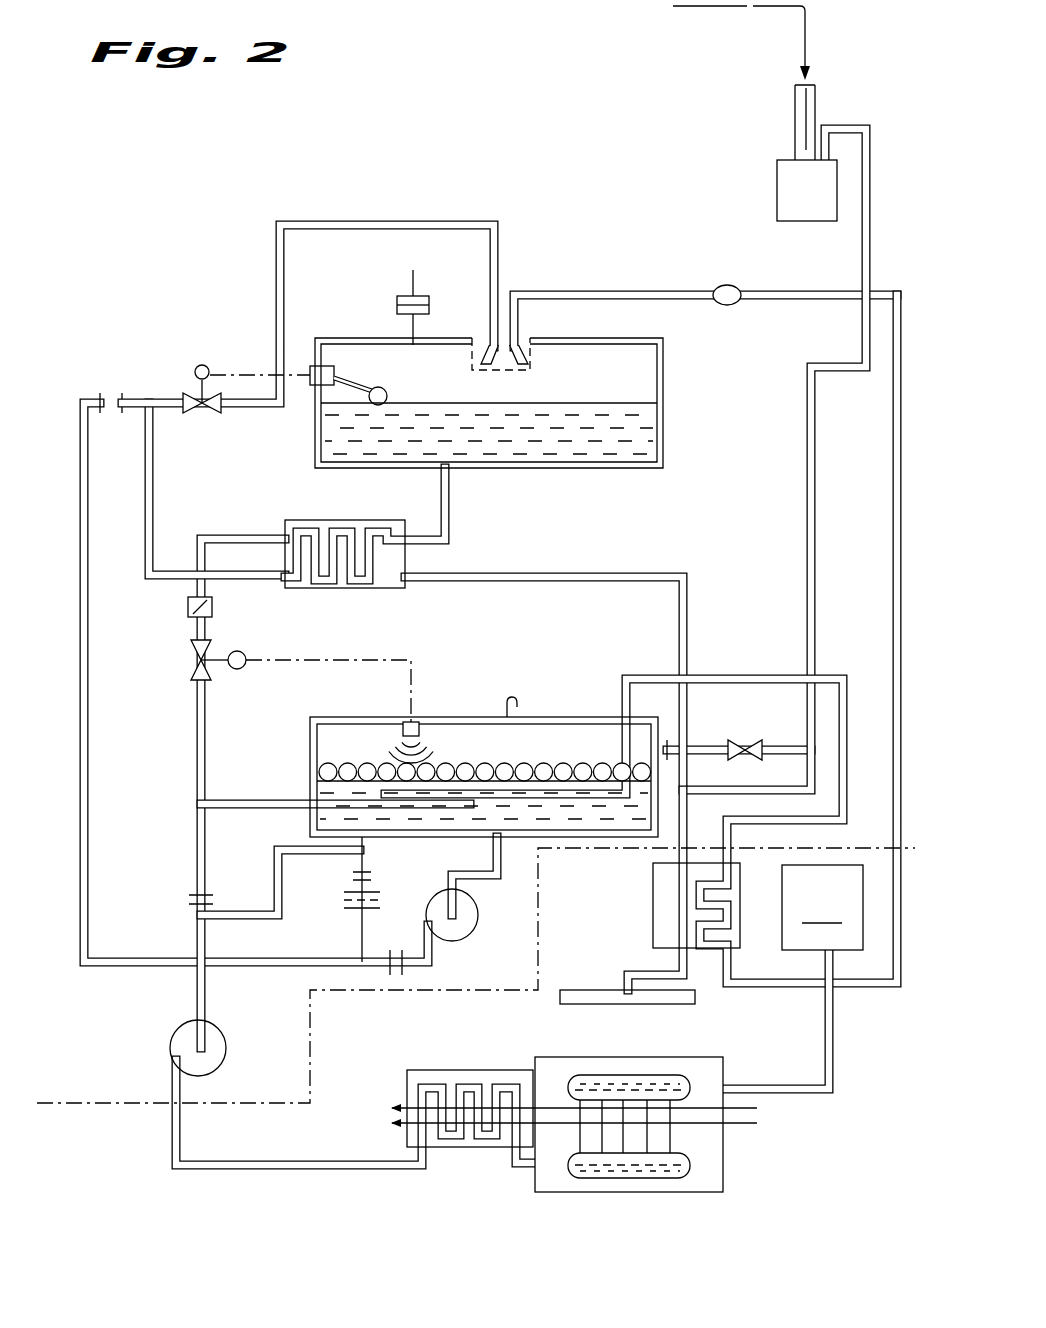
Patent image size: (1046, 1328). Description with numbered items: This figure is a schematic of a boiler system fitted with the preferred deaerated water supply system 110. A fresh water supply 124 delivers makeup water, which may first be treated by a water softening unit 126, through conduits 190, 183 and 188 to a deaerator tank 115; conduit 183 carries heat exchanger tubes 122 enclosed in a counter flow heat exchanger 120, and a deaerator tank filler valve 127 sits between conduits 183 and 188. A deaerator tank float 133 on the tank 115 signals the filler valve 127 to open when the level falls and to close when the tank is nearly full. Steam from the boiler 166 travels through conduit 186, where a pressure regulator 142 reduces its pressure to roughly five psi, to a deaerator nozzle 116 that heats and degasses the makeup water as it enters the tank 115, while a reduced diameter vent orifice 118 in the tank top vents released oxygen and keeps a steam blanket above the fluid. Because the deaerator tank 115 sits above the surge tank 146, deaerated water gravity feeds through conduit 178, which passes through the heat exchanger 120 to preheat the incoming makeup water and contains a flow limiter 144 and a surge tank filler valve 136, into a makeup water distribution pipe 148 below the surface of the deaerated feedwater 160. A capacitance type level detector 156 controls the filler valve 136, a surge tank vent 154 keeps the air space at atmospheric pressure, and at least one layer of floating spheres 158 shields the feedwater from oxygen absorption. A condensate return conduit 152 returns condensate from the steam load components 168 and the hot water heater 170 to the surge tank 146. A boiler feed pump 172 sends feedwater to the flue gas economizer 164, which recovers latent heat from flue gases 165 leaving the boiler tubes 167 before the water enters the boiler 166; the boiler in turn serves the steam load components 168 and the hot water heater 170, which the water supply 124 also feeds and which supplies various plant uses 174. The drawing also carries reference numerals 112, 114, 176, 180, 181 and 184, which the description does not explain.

The deaerated water supply system 110 is at (146, 988).
The cleaning liquid 112 is at (646, 426).
The float 114 is at (364, 366).
The deaerator tank 115 is at (665, 380).
The deaerator nozzle 116 is at (522, 337).
The reduced diameter vent orifice 118 is at (430, 304).
The counter flow heat exchanger 120 is at (311, 516).
The heat exchanger tubes 122 is at (373, 535).
The fresh water supply 124 is at (712, 14).
The water softening unit 126 is at (778, 192).
The deaerator tank filler valve 127 is at (184, 372).
The deaerator tank float 133 is at (305, 345).
The surge tank filler valve 136 is at (182, 660).
The pressure regulator 142 is at (721, 282).
The flow limiter 144 is at (188, 609).
The surge tank 146 is at (350, 722).
The makeup water distribution pipe 148 is at (427, 832).
The condensate return conduit 152 is at (738, 677).
The surge tank vent 154 is at (512, 700).
The capacitance type level detector 156 is at (428, 731).
The floating spheres 158 is at (322, 770).
The deaerated feedwater 160 is at (527, 842).
The flue gas economizer 164 is at (440, 1070).
The flue gases 165 is at (745, 1126).
The boiler 166 is at (570, 1193).
The boiler tubes 167 is at (680, 1136).
The steam load components 168 is at (776, 977).
The hot water heater 170 is at (655, 905).
The boiler feed pump 172 is at (224, 1035).
The plant uses 174 is at (622, 1005).
The pump 176 is at (461, 938).
The conduit 178 is at (226, 538).
The pump discharge line 180 is at (228, 1168).
The tank feed line 181 is at (272, 870).
The conduit 183 is at (155, 452).
The return line 184 is at (90, 756).
The conduit 186 is at (893, 488).
The conduit 188 is at (368, 222).
The conduit 190 is at (862, 257).